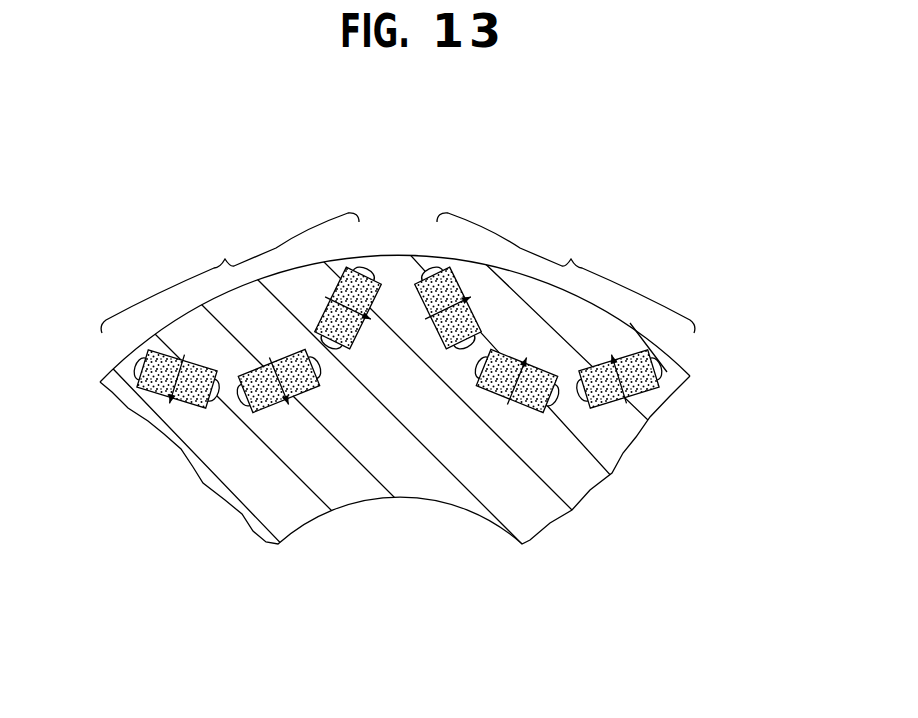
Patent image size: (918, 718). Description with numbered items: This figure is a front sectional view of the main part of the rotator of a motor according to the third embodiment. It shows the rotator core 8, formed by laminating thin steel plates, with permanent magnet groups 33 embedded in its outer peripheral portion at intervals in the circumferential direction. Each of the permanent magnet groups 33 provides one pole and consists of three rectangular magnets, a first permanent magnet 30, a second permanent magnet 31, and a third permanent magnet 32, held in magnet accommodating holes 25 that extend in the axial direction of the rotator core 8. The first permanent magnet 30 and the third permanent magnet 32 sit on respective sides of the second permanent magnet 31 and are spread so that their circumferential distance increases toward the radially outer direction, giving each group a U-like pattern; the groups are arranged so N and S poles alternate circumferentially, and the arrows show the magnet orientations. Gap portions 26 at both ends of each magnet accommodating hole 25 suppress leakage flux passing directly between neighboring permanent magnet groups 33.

The rotator core 8 is at (550, 508).
The magnet accommodating holes 25 is at (200, 403).
The gap portions 26 is at (722, 350).
The first permanent magnet 30 is at (678, 444).
The second permanent magnet 31 is at (497, 354).
The third permanent magnet 32 is at (437, 272).
The permanent magnet groups 33 is at (398, 273).